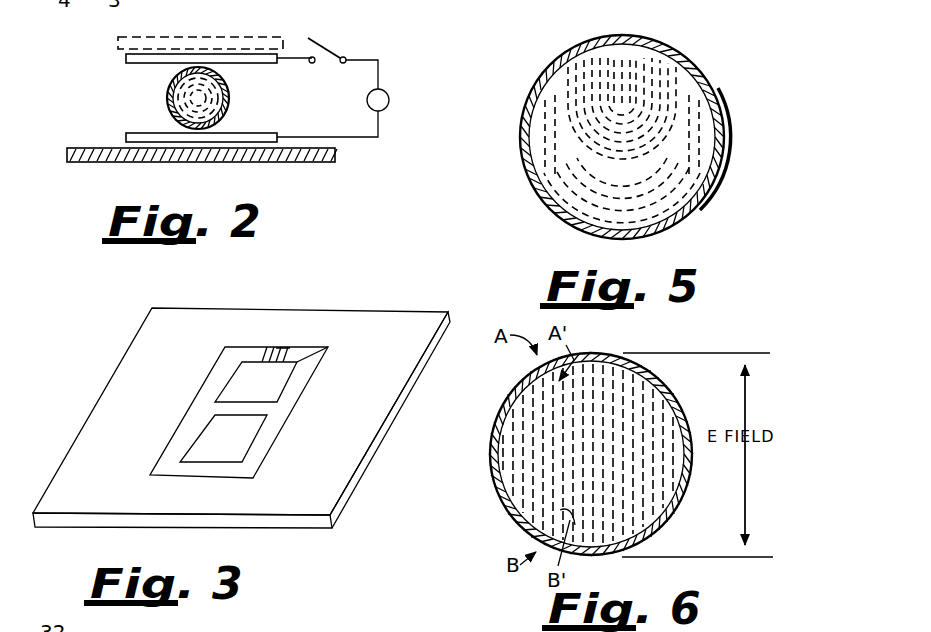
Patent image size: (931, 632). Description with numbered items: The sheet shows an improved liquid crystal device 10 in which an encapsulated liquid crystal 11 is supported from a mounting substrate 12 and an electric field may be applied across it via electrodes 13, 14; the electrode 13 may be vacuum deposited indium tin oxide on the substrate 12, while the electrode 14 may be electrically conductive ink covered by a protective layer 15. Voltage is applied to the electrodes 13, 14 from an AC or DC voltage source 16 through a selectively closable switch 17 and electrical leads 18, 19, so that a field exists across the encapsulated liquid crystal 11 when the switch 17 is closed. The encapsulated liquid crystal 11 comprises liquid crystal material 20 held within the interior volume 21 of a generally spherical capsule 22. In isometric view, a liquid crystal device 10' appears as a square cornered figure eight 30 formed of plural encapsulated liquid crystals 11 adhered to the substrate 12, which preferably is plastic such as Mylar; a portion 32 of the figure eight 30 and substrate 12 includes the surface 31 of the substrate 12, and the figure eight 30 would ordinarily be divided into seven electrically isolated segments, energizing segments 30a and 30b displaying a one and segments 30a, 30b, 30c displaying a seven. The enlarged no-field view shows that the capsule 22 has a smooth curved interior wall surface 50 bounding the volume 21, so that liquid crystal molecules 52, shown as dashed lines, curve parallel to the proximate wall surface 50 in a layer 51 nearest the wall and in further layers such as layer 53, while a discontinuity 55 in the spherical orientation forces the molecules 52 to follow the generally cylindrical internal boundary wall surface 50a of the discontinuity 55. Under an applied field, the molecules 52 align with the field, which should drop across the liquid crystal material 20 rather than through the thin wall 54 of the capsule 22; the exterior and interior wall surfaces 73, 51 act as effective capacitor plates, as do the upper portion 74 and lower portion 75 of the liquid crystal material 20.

In FIG. 2, the liquid crystal device 10 is at (187, 121).
In FIG. 3, the liquid crystal device 10' is at (372, 271).
In FIG. 2, the encapsulated liquid crystal 11 is at (207, 98).
In FIG. 5, the encapsulated liquid crystal 11 is at (650, 123).
In FIG. 2, the mounting substrate 12 is at (190, 170).
In FIG. 3, the mounting substrate 12 is at (241, 418).
In FIG. 2, the electrode 13 is at (126, 137).
In FIG. 2, the electrode 14 is at (126, 57).
In FIG. 2, the protective layer 15 is at (222, 36).
In FIG. 2, the voltage source 16 is at (389, 107).
In FIG. 2, the selectively closable switch 17 is at (326, 46).
In FIG. 2, the electrical lead 18 is at (378, 58).
In FIG. 2, the electrical lead 19 is at (376, 140).
In FIG. 2, the liquid crystal material 20 is at (227, 75).
In FIG. 5, the liquid crystal material 20 is at (722, 152).
In FIG. 2, the interior volume 21 is at (236, 97).
In FIG. 5, the interior volume 21 is at (700, 130).
In FIG. 2, the capsule 22 is at (216, 120).
In FIG. 5, the capsule 22 is at (723, 95).
In FIG. 3, the figure eight 30 is at (268, 379).
In FIG. 3, the segment 30a is at (267, 447).
In FIG. 3, the segment 30b is at (293, 405).
In FIG. 3, the segment 30c is at (315, 348).
In FIG. 3, the surface 31 is at (362, 442).
In FIG. 3, the portion 32 is at (268, 333).
In FIG. 5, the interior wall surface 50 is at (709, 176).
In FIG. 5, the internal boundary wall surface 50a is at (667, 50).
In FIG. 5, the layer 51 is at (605, 238).
In FIG. 5, the liquid crystal molecules 52 is at (648, 236).
In FIG. 5, the layer 53 is at (566, 219).
In FIG. 5, the wall 54 is at (538, 190).
In FIG. 6, the wall 54 is at (505, 502).
In FIG. 5, the discontinuity 55 is at (628, 58).
In FIG. 5, the exterior wall surface 73 is at (692, 212).
In FIG. 6, the upper portion 74 is at (630, 383).
In FIG. 6, the lower portion 75 is at (632, 522).